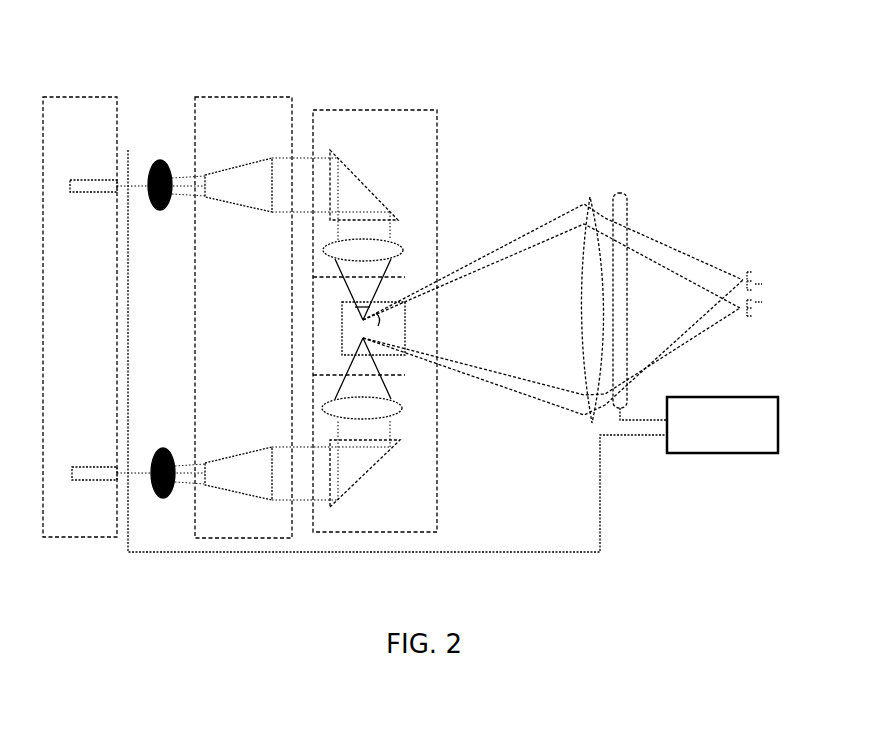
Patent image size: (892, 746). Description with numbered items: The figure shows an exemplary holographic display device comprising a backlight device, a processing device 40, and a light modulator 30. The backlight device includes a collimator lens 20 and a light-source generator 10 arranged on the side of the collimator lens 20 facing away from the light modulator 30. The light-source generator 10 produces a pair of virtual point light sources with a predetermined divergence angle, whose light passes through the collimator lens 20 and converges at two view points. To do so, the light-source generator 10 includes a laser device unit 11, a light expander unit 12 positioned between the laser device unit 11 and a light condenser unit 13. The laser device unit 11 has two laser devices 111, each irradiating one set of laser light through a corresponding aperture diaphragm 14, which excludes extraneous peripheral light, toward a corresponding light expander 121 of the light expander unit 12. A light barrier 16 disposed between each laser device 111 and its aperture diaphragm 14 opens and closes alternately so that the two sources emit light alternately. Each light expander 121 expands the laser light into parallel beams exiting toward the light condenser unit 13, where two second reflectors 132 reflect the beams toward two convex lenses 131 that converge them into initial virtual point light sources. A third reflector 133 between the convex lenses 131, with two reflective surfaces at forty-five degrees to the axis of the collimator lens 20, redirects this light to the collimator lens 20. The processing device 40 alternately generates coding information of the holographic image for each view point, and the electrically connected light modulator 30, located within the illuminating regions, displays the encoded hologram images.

The light-source generator 10 is at (90, 42).
The laser device unit 11 is at (57, 97).
The laser device 111 is at (82, 179).
The aperture diaphragm 14 is at (160, 160).
The light barrier 16 is at (128, 152).
The light expander unit 12 is at (225, 97).
The light expander 121 is at (228, 172).
The light condenser unit 13 is at (352, 108).
The convex lens 131 is at (392, 248).
The second reflector 132 is at (355, 177).
The third reflector 133 is at (343, 320).
The collimator lens 20 is at (590, 197).
The light modulator 30 is at (621, 193).
The processing device 40 is at (778, 423).